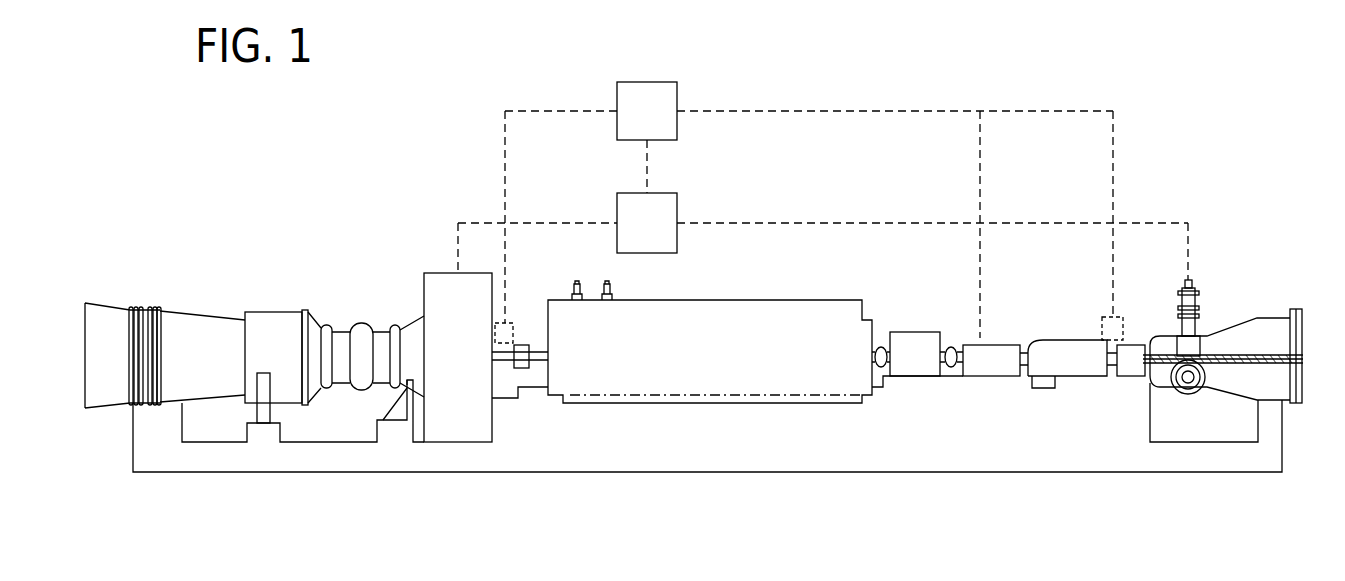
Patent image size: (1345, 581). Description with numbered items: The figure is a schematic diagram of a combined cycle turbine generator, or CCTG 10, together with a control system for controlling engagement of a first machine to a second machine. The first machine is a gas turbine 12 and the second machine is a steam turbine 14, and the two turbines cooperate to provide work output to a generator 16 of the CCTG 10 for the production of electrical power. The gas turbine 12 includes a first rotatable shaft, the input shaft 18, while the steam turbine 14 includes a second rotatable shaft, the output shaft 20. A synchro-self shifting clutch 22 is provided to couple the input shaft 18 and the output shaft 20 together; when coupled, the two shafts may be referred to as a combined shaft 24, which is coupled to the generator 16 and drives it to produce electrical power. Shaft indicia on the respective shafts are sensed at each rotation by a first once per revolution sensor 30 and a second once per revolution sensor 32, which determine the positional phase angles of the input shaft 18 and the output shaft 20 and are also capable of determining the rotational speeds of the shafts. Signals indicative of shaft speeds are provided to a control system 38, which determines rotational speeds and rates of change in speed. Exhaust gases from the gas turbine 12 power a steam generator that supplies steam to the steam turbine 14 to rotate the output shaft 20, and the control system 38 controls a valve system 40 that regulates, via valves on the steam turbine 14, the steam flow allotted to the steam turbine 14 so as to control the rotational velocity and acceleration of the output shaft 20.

The combined cycle turbine generator 10 is at (800, 90).
The gas turbine 12 is at (215, 302).
The steam turbine 14 is at (1228, 318).
The generator 16 is at (760, 298).
The input shaft 18 is at (503, 365).
The output shaft 20 is at (1113, 367).
The synchro-self shifting clutch apparatus 22 is at (997, 343).
The combined shaft 24 is at (878, 345).
The first once per revolution sensor 30 is at (513, 333).
The second once per revolution sensor 32 is at (1123, 333).
The control system 38 is at (633, 123).
The valve system 40 is at (633, 235).